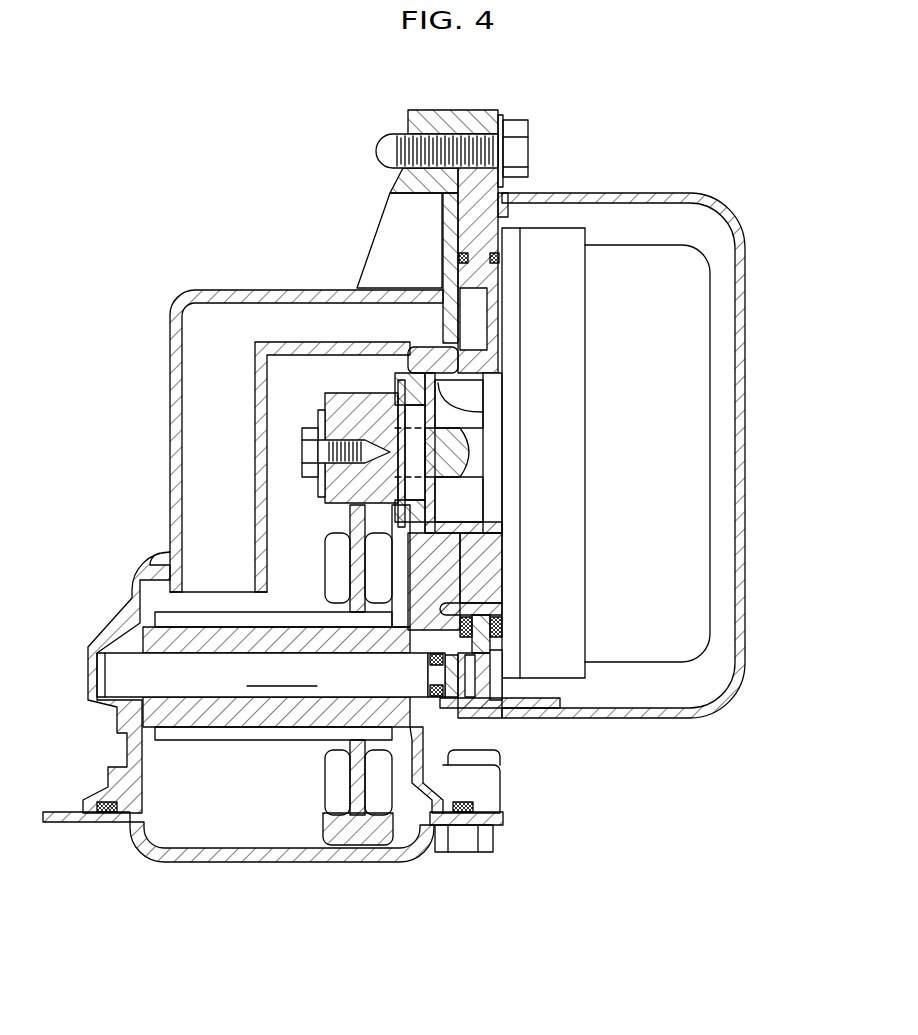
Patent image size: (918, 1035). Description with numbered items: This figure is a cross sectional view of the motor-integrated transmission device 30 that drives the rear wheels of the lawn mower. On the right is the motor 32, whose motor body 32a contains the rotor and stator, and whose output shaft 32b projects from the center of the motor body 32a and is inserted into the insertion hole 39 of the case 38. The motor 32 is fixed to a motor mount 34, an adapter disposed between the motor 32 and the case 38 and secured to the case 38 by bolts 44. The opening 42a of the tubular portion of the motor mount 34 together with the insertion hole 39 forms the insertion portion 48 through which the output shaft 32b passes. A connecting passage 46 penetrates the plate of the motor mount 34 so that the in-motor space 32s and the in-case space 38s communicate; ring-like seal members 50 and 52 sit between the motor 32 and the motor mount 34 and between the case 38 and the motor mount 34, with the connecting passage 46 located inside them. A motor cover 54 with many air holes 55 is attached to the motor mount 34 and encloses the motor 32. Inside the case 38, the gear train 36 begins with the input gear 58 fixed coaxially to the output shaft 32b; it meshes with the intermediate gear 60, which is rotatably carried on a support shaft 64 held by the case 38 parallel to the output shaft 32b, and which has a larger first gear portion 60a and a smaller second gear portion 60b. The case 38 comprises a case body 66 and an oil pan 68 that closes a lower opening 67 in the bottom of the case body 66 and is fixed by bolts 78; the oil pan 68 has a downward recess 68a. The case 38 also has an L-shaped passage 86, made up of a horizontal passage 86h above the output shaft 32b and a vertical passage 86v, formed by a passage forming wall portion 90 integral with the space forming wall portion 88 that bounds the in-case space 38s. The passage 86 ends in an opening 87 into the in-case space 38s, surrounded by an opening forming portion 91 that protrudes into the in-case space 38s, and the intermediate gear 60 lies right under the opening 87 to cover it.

The transmission device 30 is at (140, 264).
The motor 32 is at (714, 336).
The motor body 32a is at (680, 262).
The output shaft 32b is at (458, 463).
The in-motor space 32s is at (680, 480).
The motor mount 34 is at (480, 106).
The gear train 36 is at (300, 414).
The case 38 is at (168, 320).
The in-case space 38s is at (168, 774).
The insertion hole 39 is at (482, 420).
The opening 42a is at (485, 396).
The bolts 44 is at (518, 147).
The connecting passage 46 is at (500, 322).
The insertion portion 48 is at (643, 360).
The seal member 50 is at (500, 259).
The seal member 52 is at (458, 259).
The motor cover 54 is at (710, 202).
The air holes 55 is at (684, 194).
The input gear 58 is at (362, 412).
The intermediate gear 60 is at (275, 745).
The first gear portion 60a is at (357, 842).
The second gear portion 60b is at (215, 640).
The support shaft 64 is at (126, 675).
The case body 66 is at (114, 632).
The lower opening 67 is at (186, 850).
The oil pan 68 is at (306, 866).
The recess 68a is at (218, 850).
The bolts 78 is at (465, 840).
The passage 86 is at (213, 330).
The horizontal passage 86h is at (335, 318).
The vertical passage 86v is at (222, 452).
The opening 87 is at (232, 596).
The space forming wall portion 88 is at (126, 742).
The passage forming wall portion 90 is at (177, 488).
The opening forming portion 91 is at (170, 578).